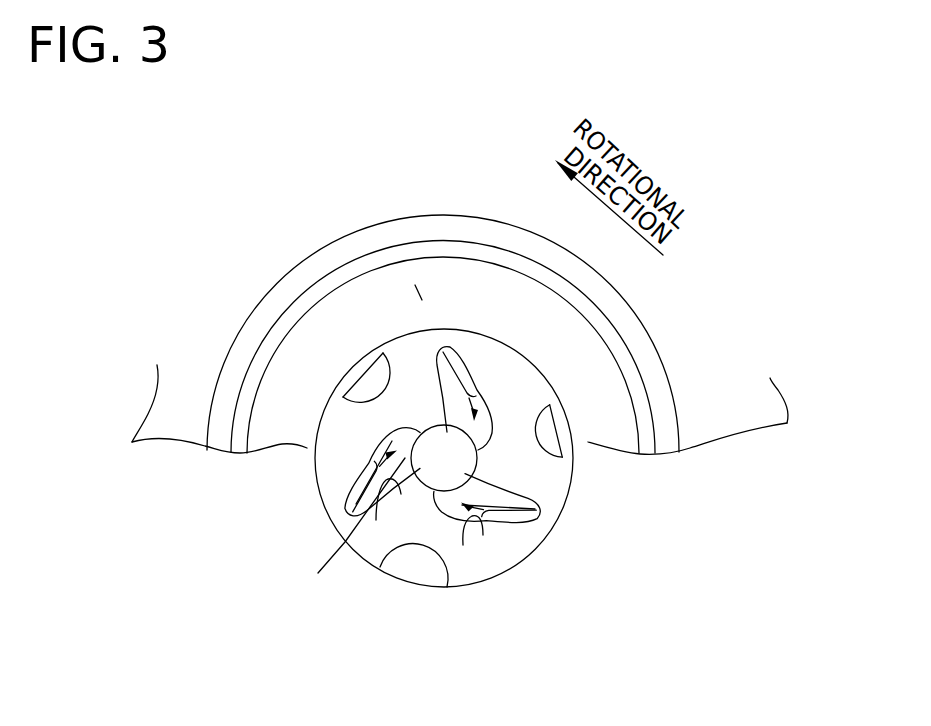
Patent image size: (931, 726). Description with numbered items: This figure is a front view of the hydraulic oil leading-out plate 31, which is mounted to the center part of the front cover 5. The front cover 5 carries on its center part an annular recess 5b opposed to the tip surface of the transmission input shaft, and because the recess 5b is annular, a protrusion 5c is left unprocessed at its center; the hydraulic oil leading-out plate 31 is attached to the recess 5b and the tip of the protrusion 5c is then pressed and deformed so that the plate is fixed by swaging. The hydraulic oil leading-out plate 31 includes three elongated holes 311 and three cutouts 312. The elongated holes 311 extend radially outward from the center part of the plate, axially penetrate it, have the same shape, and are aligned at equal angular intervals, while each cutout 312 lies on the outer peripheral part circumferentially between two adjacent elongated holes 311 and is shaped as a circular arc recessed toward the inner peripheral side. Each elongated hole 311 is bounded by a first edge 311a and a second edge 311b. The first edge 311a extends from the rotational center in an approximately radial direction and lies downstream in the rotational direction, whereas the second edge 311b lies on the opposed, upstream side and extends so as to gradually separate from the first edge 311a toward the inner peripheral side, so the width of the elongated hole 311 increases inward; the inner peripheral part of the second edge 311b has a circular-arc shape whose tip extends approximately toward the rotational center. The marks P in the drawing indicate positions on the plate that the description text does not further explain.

The front cover 5 is at (590, 355).
The recess 5b is at (366, 380).
The protrusion 5c is at (400, 448).
The hydraulic oil leading-out plate 31 is at (572, 519).
The elongated hole 311 is at (490, 530).
The first edge 311a is at (440, 350).
The second edge 311b is at (477, 398).
The cutout 312 is at (443, 585).
The position P is at (447, 347).